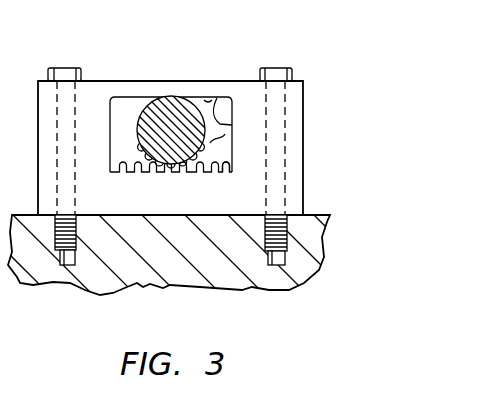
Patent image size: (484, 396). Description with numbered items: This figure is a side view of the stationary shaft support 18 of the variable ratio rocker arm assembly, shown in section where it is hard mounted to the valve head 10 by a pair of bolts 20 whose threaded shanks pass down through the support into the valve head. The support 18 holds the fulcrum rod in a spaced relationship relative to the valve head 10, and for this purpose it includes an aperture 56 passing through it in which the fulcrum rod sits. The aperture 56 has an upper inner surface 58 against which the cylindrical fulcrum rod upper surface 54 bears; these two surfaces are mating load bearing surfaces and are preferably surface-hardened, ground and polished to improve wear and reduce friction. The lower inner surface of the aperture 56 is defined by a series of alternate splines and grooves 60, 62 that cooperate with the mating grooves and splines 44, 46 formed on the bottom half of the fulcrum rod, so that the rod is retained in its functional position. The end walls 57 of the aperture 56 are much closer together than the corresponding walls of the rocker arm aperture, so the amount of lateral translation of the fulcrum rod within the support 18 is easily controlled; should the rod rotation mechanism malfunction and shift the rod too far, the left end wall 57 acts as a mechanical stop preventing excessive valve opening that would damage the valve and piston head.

The valve head 10 is at (299, 233).
The stationary shaft support 18 is at (97, 103).
The bolts 20 is at (65, 70).
The axial grooves 44 is at (133, 162).
The axial splines 46 is at (138, 160).
The fulcrum rod upper surface 54 is at (143, 97).
The aperture 56 is at (225, 134).
The end walls 57 is at (125, 112).
The upper inner surface 58 is at (208, 104).
The splines 60 is at (228, 160).
The grooves 62 is at (207, 163).